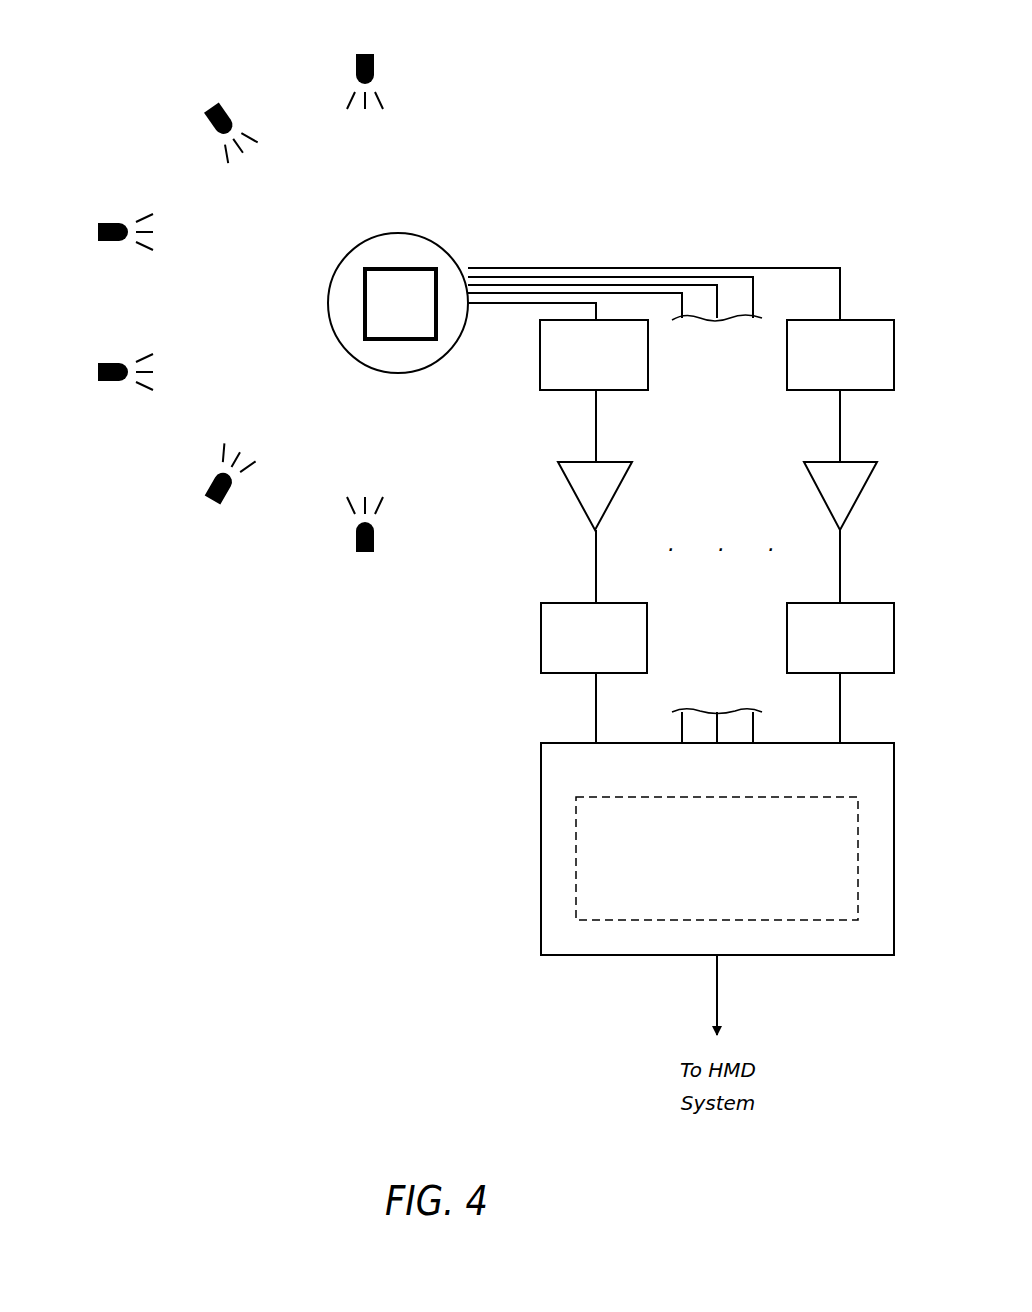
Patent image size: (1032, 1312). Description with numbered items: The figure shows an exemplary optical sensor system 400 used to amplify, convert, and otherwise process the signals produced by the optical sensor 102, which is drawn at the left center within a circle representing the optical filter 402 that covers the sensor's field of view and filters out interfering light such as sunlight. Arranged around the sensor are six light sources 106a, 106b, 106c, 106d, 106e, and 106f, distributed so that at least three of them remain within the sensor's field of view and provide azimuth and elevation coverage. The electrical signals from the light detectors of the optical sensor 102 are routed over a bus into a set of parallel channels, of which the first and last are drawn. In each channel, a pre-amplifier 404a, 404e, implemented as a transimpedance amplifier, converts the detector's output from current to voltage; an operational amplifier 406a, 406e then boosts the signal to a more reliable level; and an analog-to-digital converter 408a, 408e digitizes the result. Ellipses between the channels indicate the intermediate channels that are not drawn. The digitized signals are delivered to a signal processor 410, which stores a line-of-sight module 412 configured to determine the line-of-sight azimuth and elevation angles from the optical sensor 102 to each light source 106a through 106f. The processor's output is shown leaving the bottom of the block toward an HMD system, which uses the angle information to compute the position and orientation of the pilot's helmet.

The optical sensor 102 is at (363, 303).
The light source 106a is at (365, 55).
The light source 106b is at (213, 108).
The light source 106c is at (98, 233).
The light source 106d is at (98, 372).
The light source 106e is at (213, 500).
The light source 106f is at (365, 552).
The optical sensor system 400 is at (736, 145).
The optical filter 402 is at (398, 233).
The pre-amplifier 404a is at (558, 392).
The pre-amplifier 404e is at (805, 392).
The operational amplifier 406a is at (578, 497).
The operational amplifier 406e is at (823, 497).
The analog-to-digital converter 408a is at (541, 638).
The analog-to-digital converter 408e is at (787, 638).
The signal processor 410 is at (686, 849).
The line-of-sight module 412 is at (717, 858).